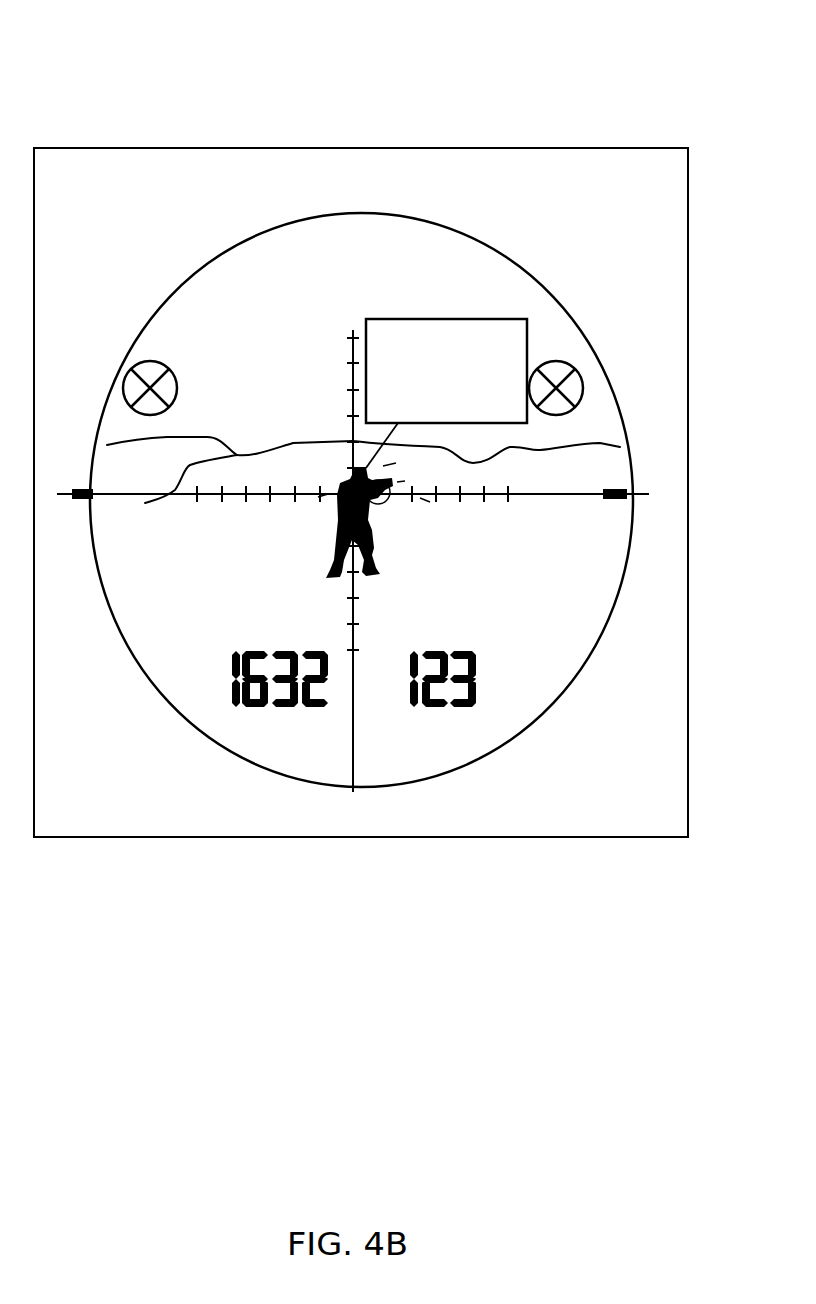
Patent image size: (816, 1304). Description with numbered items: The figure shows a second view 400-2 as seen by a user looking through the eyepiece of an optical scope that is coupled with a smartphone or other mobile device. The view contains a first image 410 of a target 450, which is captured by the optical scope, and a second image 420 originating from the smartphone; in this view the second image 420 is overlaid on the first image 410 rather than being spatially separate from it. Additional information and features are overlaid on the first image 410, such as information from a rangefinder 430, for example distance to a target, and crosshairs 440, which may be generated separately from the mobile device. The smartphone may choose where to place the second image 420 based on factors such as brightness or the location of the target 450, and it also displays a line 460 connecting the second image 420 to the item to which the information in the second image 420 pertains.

The second view 400-2 is at (588, 94).
The first image 410 is at (538, 716).
The second image 420 is at (465, 319).
The information from a rangefinder 430 is at (410, 705).
The crosshairs 440 is at (276, 495).
The target 450 is at (362, 500).
The line 460 is at (392, 430).